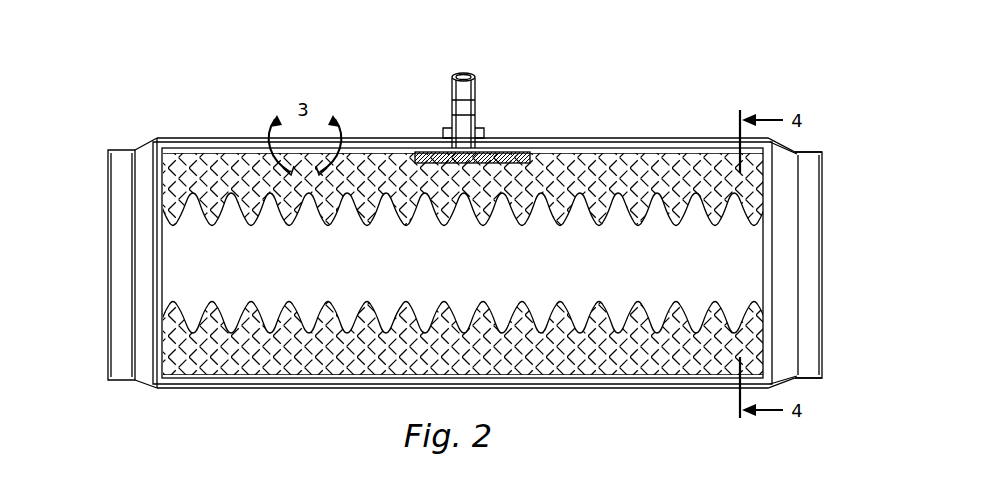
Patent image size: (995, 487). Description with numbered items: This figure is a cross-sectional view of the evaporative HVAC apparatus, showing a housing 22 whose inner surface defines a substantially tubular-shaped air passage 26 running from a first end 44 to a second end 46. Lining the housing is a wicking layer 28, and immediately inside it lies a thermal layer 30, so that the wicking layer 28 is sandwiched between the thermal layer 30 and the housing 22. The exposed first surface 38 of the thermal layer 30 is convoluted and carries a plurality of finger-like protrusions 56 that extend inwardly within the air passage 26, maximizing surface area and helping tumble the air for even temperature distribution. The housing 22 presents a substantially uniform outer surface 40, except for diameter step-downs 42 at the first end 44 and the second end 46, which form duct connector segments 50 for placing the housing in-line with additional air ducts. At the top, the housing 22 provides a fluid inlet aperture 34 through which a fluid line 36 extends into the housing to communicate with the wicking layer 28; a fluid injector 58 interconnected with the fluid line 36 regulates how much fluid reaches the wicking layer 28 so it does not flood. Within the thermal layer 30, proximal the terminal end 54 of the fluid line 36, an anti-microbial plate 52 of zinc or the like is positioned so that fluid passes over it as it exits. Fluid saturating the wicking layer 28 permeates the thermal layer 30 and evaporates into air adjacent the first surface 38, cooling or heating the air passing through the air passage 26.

The housing 22 is at (201, 139).
The air passage 26 is at (571, 258).
The wicking layer 28 is at (646, 148).
The thermal layer 30 is at (698, 160).
The fluid inlet aperture 34 is at (469, 152).
The fluid line 36 is at (478, 84).
The first surface 38 is at (241, 220).
The outer surface 40 is at (595, 138).
The diameter step-downs 42 is at (151, 147).
The first end 44 is at (184, 265).
The second end 46 is at (745, 266).
The duct connector segments 50 is at (107, 150).
The anti-microbial plate 52 is at (422, 162).
The terminal end 54 is at (460, 147).
The finger-like protrusions 56 is at (292, 302).
The fluid injector 58 is at (478, 124).